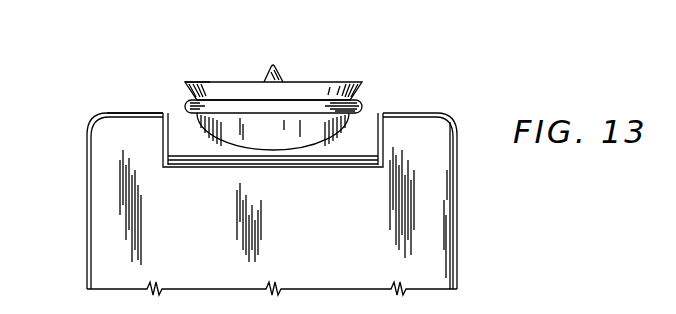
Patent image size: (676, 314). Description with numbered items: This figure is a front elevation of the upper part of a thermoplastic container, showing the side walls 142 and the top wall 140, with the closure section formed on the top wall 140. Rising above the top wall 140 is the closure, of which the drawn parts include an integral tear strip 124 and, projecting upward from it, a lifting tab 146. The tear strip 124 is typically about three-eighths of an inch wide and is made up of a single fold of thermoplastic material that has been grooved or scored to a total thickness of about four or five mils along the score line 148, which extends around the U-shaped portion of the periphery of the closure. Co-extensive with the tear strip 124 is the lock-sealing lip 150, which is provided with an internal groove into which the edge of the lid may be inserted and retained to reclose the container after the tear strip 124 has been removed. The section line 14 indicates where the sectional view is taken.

The section line 14- 14 is at (273, 23).
The tear strip 124 is at (361, 92).
The top wall 140 is at (149, 110).
The side walls 142 is at (88, 182).
The lifting tab 146 is at (283, 77).
The score line 148 is at (188, 97).
The lock-sealing lip 150 is at (363, 108).